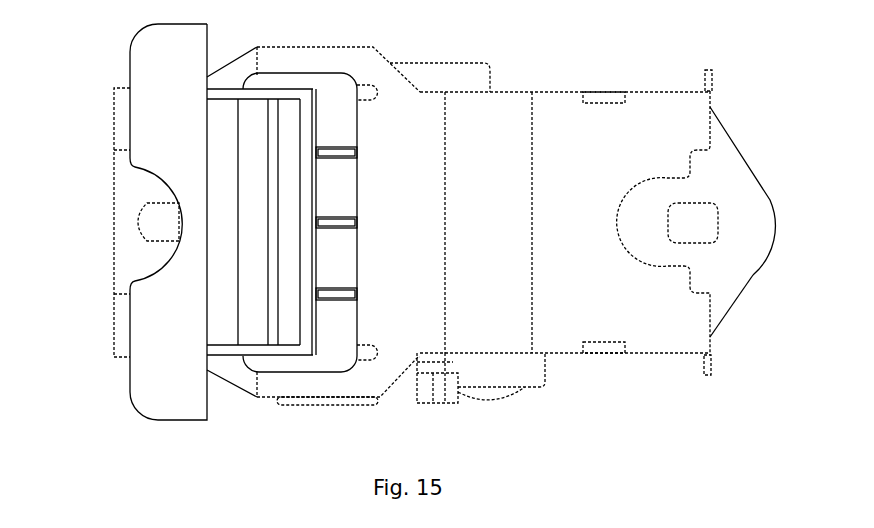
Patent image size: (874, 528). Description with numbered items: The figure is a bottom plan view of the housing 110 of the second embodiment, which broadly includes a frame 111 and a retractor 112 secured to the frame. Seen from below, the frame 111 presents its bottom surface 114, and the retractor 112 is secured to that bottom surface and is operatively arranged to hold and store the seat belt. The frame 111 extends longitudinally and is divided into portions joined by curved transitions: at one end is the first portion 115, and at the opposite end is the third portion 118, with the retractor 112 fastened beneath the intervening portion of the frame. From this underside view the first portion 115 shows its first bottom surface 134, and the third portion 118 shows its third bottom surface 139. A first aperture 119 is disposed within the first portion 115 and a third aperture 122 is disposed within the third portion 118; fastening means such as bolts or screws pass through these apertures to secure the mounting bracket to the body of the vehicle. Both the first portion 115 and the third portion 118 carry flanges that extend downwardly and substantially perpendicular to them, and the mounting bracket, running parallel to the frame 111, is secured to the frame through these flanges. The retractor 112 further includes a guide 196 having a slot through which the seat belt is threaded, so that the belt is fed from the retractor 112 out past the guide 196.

The housing 110 is at (577, 58).
The frame 111 is at (730, 277).
The retractor 112 is at (440, 395).
The bottom surface 114 is at (744, 211).
The first portion 115 is at (127, 88).
The third portion 118 is at (740, 257).
The first aperture 119 is at (155, 218).
The third aperture 122 is at (693, 217).
The first bottom surface 134 is at (128, 185).
The third bottom surface 139 is at (717, 310).
The guide 196 is at (334, 347).